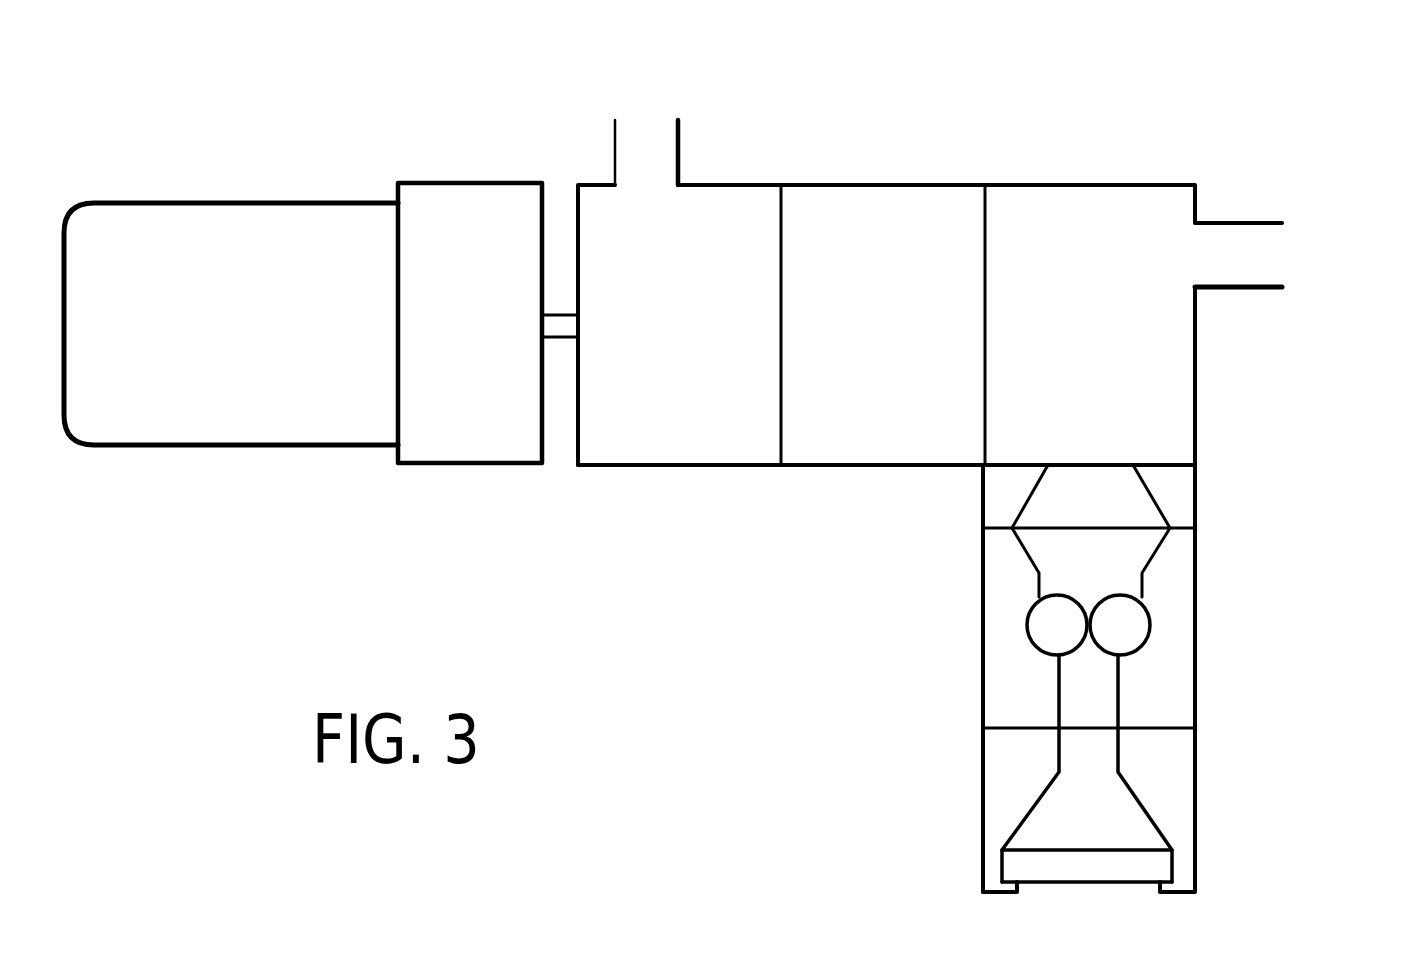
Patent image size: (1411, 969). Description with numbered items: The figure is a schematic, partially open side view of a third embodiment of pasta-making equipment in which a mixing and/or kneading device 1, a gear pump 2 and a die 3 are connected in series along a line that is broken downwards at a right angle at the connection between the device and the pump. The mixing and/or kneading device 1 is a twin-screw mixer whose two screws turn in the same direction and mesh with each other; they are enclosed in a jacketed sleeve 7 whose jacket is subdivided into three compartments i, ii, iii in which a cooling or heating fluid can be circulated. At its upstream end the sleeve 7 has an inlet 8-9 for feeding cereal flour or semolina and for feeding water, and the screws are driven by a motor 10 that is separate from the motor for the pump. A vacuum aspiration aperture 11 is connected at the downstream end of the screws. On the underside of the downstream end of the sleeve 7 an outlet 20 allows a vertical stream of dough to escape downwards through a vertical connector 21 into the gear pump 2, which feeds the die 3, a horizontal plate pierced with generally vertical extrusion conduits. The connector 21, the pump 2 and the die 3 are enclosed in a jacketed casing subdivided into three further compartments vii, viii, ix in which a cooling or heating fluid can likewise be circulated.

The mixing and/or kneading device 1 is at (775, 135).
The jacketed sleeve 7 is at (885, 185).
The inlet 8-9 is at (642, 130).
The motor 10 is at (255, 445).
The vacuum aspiration aperture 11 is at (1265, 255).
The compartment i is at (672, 467).
The compartment ii is at (862, 467).
The compartment iii is at (1196, 350).
The compartment vii is at (983, 500).
The compartment viii is at (983, 652).
The compartment ix is at (983, 802).
The outlet 20 is at (1097, 465).
The vertical connector 21 is at (1117, 492).
The gear pump 2 is at (1135, 620).
The die 3 is at (1150, 863).